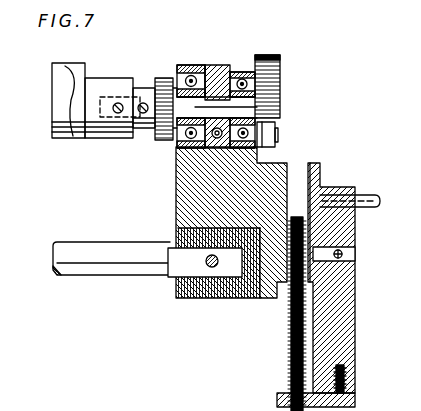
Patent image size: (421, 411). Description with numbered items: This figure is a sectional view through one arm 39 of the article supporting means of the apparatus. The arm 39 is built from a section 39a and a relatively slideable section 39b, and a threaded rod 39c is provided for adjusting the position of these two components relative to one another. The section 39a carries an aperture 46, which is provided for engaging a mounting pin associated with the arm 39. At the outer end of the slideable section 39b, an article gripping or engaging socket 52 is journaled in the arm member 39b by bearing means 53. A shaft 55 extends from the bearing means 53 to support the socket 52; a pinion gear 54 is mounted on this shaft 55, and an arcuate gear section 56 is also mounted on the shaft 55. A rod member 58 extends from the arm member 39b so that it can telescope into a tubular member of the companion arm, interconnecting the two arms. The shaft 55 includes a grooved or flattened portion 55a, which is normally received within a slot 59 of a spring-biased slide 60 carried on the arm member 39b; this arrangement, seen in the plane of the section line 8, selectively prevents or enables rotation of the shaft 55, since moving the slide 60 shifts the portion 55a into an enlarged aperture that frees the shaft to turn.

The section line 8- 8 is at (215, 64).
The article gripping or engaging socket 52 is at (60, 80).
The bearing means 53 is at (180, 152).
The pinion gear 54 is at (165, 78).
The shaft 55 is at (178, 136).
The grooved or flattened portion 55a is at (280, 99).
The arcuate gear section 56 is at (275, 55).
The slot 59 is at (205, 66).
The spring-biased slide 60 is at (217, 65).
The arm 39 is at (335, 61).
The section of arm 39a is at (347, 316).
The relatively slideable section of arm 39b is at (187, 190).
The threaded rod 39c is at (290, 372).
The aperture 46 is at (344, 254).
The rod member 58 is at (72, 243).